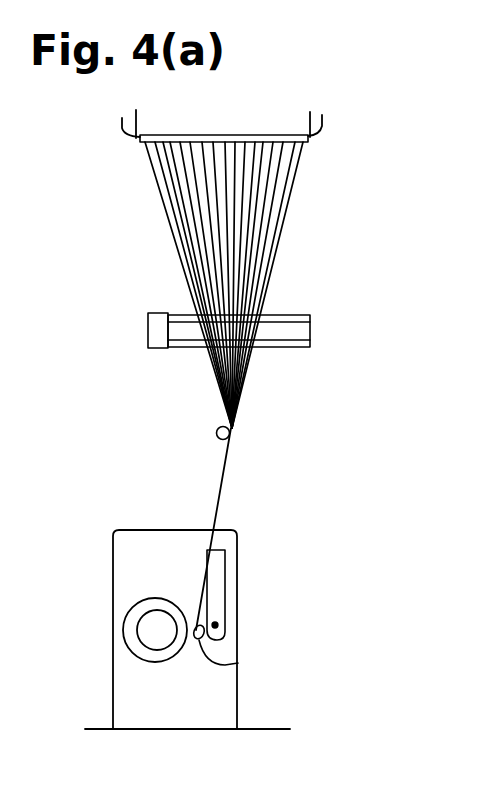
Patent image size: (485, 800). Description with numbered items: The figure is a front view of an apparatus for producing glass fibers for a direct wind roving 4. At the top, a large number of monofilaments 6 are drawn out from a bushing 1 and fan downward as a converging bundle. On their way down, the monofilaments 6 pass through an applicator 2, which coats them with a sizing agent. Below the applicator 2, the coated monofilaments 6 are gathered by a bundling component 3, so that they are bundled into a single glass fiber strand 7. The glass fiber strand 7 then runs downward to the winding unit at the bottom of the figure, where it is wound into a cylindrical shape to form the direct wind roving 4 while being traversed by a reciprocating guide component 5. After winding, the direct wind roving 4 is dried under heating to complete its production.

The bushing 1 is at (309, 137).
The applicator 2 is at (312, 322).
The bundling component 3 is at (215, 433).
The direct wind roving 4 is at (113, 592).
The guide component 5 is at (238, 663).
The monofilaments 6 is at (283, 217).
The glass fiber strand 7 is at (224, 482).